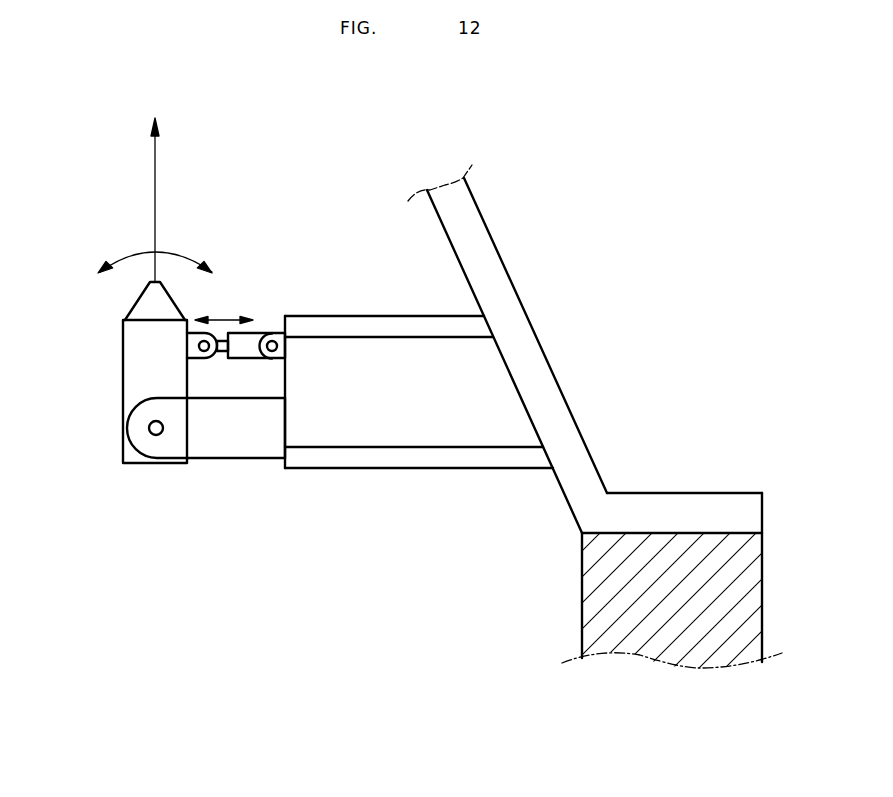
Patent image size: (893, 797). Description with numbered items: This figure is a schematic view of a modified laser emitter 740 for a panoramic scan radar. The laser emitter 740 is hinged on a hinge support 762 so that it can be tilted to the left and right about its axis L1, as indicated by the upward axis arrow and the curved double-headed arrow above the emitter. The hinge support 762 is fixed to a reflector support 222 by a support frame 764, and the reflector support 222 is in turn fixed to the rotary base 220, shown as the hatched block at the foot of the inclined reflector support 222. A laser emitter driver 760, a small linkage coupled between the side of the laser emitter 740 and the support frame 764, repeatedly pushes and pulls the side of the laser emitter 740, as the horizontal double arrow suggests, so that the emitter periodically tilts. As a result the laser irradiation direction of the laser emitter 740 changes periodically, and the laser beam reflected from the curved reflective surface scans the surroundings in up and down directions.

The reflector support 222 is at (507, 263).
The rotary base 220 is at (582, 597).
The support frame 764 is at (395, 457).
The hinge support 762 is at (220, 440).
The laser emitter 740 is at (133, 357).
The laser emitter driver 760 is at (250, 342).
The rotation axis L1 is at (155, 182).